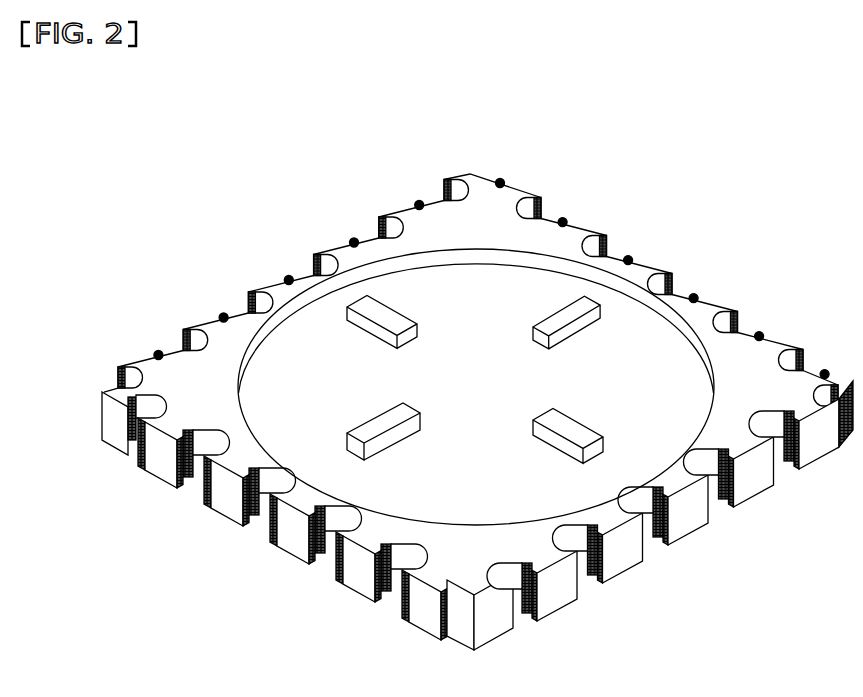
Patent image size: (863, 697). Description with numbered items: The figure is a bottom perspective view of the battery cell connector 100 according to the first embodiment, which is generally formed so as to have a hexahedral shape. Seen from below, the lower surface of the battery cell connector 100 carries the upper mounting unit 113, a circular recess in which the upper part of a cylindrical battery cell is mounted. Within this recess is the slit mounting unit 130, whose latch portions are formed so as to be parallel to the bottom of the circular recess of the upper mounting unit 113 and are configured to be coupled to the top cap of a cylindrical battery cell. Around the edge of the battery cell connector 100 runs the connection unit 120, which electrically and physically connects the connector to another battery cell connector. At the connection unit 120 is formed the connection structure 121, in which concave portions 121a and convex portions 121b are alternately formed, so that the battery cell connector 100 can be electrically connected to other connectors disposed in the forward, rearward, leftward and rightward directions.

The battery cell connector 100 is at (477, 393).
The upper mounting unit 113 is at (496, 290).
The connection unit 120 is at (477, 422).
The connection structure 121 is at (477, 526).
The concave portion 121a is at (650, 540).
The convex portion 121b is at (690, 518).
The slit mounting unit 130 is at (553, 413).